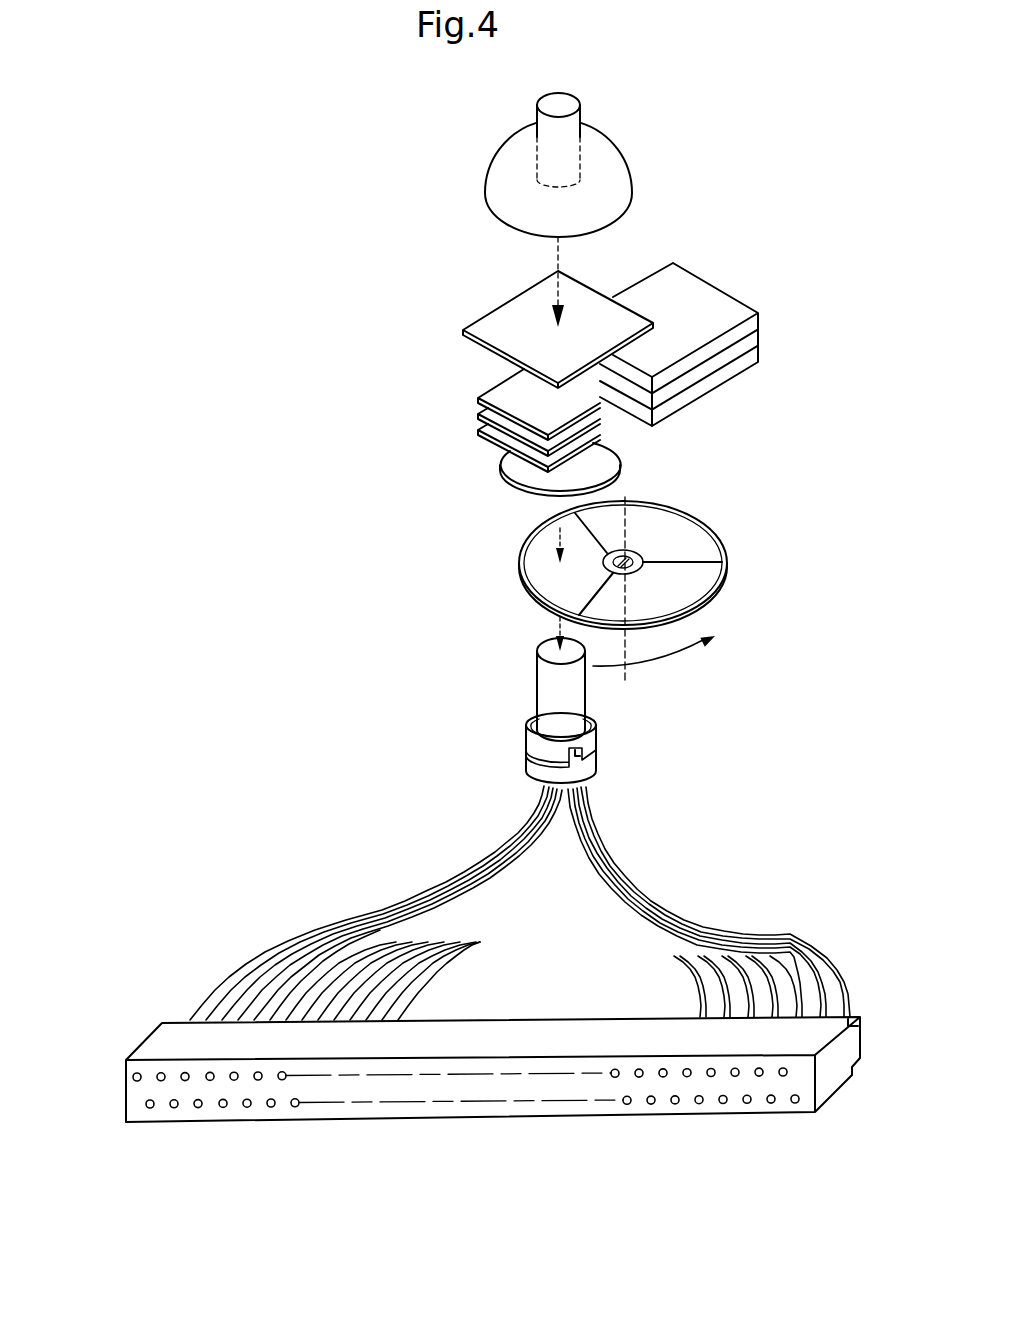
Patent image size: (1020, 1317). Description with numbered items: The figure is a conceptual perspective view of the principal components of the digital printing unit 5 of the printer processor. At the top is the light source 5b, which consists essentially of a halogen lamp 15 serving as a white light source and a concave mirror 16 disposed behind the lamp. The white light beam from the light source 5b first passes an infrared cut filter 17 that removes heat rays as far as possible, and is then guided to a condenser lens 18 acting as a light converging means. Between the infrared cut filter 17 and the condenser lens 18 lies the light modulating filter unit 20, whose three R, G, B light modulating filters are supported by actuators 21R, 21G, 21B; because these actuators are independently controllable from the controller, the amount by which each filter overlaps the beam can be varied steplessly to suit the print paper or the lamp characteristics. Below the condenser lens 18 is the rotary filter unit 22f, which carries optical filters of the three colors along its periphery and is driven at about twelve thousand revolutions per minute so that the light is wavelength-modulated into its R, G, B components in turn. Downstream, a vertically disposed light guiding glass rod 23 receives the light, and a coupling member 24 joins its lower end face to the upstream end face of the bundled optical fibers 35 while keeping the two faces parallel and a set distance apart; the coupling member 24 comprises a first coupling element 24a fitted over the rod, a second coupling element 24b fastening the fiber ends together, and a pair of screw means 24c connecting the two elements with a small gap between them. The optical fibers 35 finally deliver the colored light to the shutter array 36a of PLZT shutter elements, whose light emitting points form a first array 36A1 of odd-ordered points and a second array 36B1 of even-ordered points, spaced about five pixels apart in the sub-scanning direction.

The digital printing unit 5 is at (266, 776).
The light source 5b is at (486, 172).
The halogen lamp 15 is at (574, 163).
The concave mirror 16 is at (627, 163).
The infrared cut filter 17 is at (502, 306).
The condenser lens 18 is at (500, 477).
The light modulating filter unit 20 is at (460, 395).
The actuator 21R is at (720, 298).
The actuator 21G is at (753, 338).
The actuator 21B is at (743, 372).
The rotary filter unit 22f is at (733, 546).
The light guiding glass rod 23 is at (537, 673).
The coupling member 24 is at (515, 751).
The first coupling element 24a is at (593, 735).
The second coupling element 24b is at (582, 777).
The screw means 24c is at (588, 763).
The optical fibers 35 is at (306, 955).
The shutter array 36a is at (560, 1025).
The first array 36A1 is at (118, 1079).
The second array 36B1 is at (128, 1110).